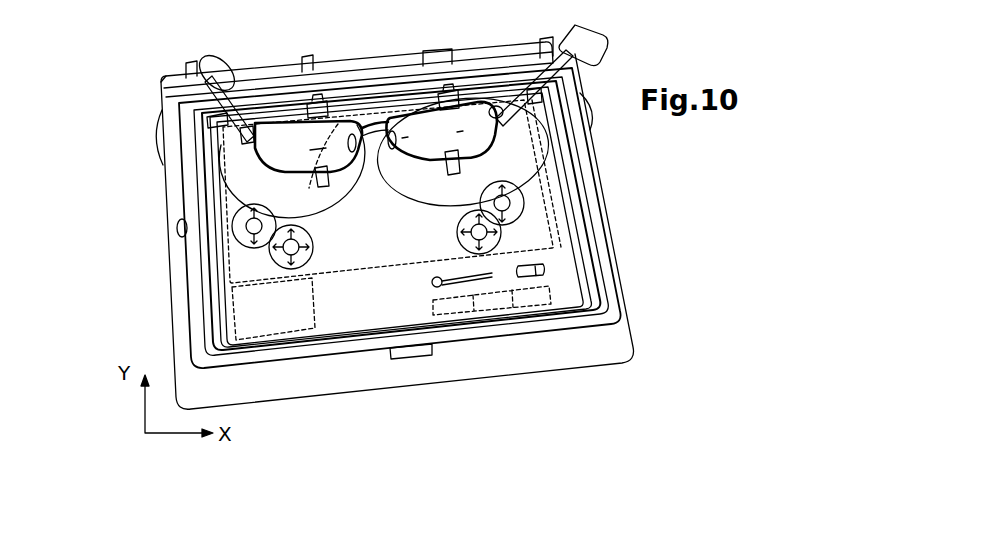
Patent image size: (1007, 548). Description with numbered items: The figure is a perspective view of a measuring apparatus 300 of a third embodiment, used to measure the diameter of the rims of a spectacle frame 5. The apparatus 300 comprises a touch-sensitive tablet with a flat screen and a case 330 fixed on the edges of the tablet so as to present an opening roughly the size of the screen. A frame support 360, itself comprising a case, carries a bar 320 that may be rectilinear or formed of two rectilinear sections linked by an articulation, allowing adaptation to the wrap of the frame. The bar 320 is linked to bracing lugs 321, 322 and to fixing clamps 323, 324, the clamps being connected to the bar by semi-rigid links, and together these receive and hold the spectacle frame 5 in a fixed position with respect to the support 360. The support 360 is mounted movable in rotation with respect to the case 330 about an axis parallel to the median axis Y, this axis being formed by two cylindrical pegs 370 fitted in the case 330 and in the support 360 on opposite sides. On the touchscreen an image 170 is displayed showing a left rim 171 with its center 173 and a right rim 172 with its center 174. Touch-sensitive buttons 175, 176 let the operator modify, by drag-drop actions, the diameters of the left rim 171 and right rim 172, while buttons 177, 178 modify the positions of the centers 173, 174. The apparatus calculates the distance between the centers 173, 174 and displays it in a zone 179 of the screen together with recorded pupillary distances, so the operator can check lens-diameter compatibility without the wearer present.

The spectacle frame 5 is at (168, 128).
The measuring apparatus 300 is at (152, 186).
The bar 320 is at (418, 100).
The bracing lug 321 is at (313, 57).
The bracing lug 322 is at (458, 106).
The fixing clamp 323 is at (190, 200).
The fixing clamp 324 is at (535, 165).
The case 330 is at (610, 338).
The frame support 360 is at (550, 322).
The cylindrical peg 370 is at (380, 47).
The image 170 is at (377, 280).
The left rim 171 is at (363, 205).
The right rim 172 is at (458, 240).
The center of the left rim 173 is at (330, 112).
The center of the right rim 174 is at (458, 147).
The touch-sensitive button 175 is at (235, 228).
The touch-sensitive button 176 is at (520, 196).
The touch-sensitive button 177 is at (232, 323).
The touch-sensitive button 178 is at (500, 230).
The zone of the touchscreen 179 is at (277, 338).